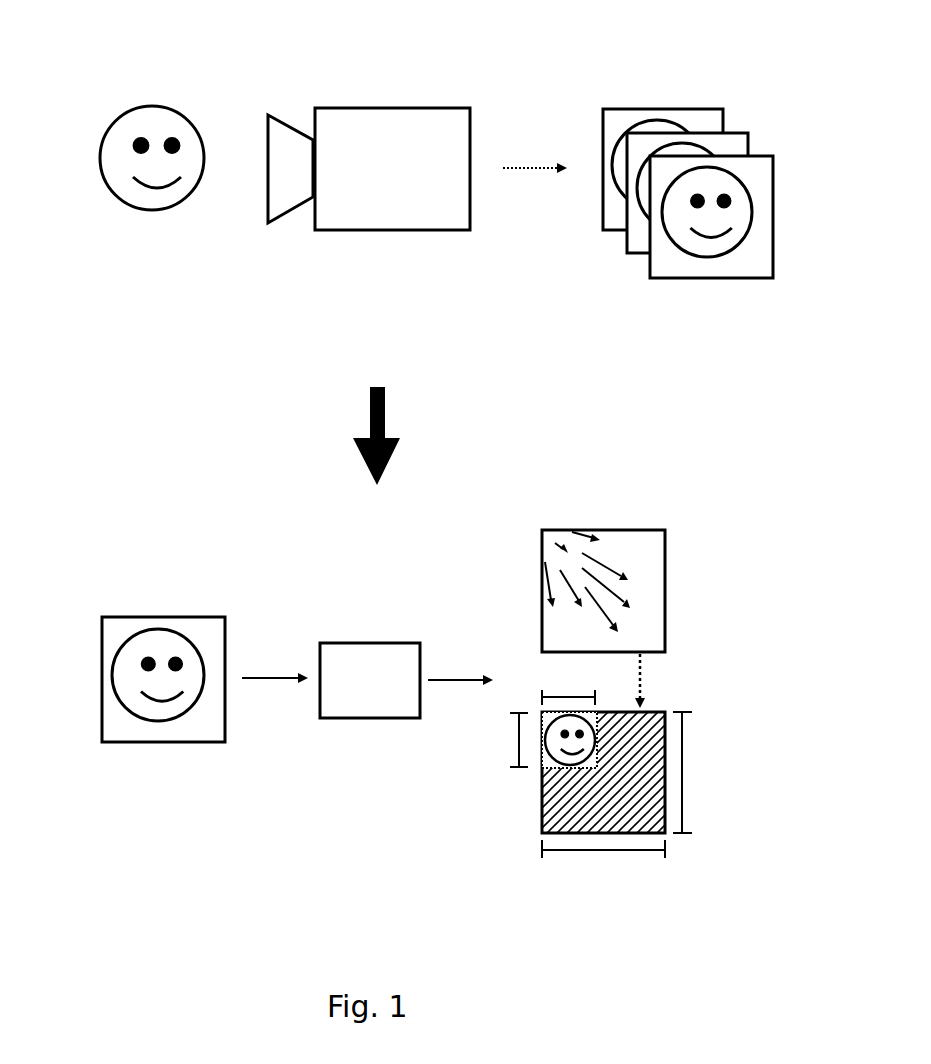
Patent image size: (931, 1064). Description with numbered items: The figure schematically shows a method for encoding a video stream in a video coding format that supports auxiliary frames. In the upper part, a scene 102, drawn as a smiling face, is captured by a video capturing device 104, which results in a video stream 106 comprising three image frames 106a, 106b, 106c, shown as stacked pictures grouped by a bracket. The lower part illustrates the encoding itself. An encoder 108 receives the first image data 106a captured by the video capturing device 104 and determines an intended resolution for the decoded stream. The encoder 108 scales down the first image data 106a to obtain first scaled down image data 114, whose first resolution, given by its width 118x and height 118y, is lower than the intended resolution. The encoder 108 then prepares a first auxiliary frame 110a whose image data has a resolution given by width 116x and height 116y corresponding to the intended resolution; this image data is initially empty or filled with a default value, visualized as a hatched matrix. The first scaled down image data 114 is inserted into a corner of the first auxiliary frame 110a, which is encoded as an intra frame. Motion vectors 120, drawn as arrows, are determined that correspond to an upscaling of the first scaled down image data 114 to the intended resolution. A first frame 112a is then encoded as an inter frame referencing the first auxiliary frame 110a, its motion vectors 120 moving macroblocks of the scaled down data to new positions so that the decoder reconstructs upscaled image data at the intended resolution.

The scene 102 is at (128, 242).
The video capturing device 104 is at (370, 231).
The video stream 106 is at (684, 190).
The first image data 106a is at (767, 153).
The second image frame 106b is at (735, 130).
The third image frame 106c is at (698, 107).
The encoder 108 is at (384, 690).
The first auxiliary frame 110a is at (558, 792).
The first frame 112a is at (634, 551).
The first scaled down image data 114 is at (542, 768).
The horizontal intended resolution 116x is at (600, 850).
The vertical intended resolution 116y is at (683, 772).
The horizontal first resolution 118x is at (567, 695).
The vertical first resolution 118y is at (517, 733).
The motion vectors 120 is at (650, 536).